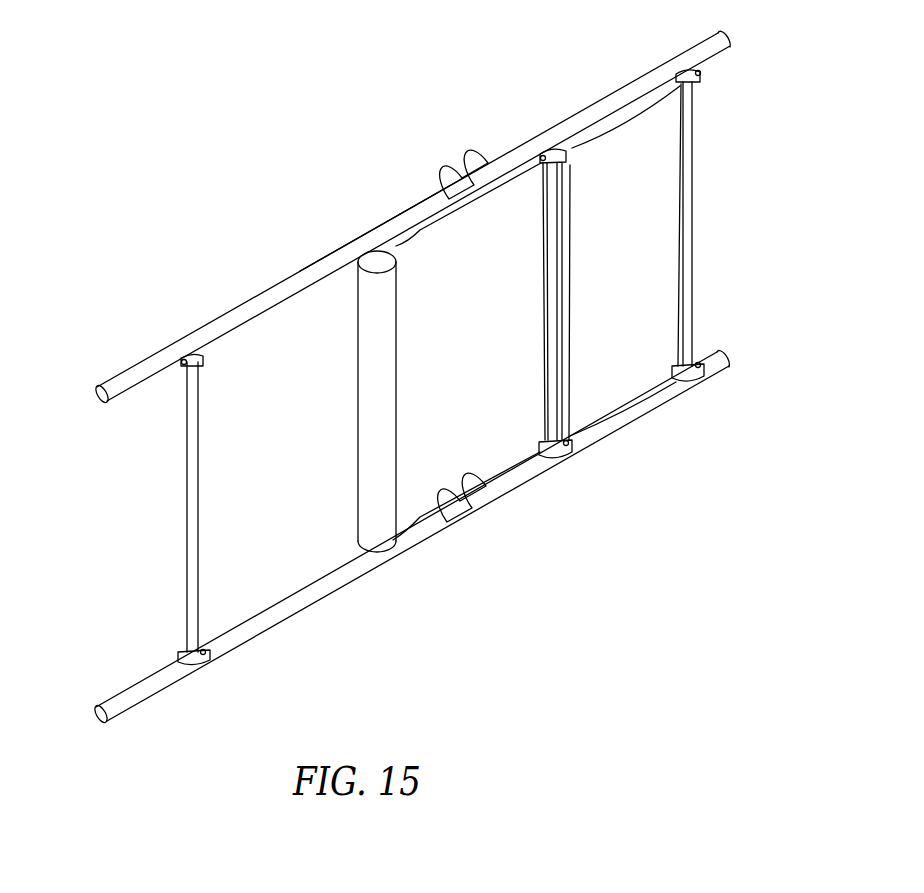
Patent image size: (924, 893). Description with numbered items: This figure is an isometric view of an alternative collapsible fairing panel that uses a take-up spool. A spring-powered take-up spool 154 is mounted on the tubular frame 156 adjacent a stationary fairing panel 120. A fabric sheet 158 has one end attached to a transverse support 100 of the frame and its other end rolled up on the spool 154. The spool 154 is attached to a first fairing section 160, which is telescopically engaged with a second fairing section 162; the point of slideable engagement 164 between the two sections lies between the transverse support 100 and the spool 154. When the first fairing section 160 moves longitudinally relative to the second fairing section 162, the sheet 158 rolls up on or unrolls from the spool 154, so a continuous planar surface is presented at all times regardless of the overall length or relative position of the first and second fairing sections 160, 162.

The transverse support 100 is at (558, 168).
The fairing panel 120 is at (652, 242).
The take-up spool 154 is at (345, 443).
The tubular frame 156 is at (422, 196).
The fabric sheet 158 is at (491, 363).
The first fairing section 160 is at (387, 212).
The second fairing section 162 is at (643, 78).
The point of slideable engagement 164 is at (447, 182).